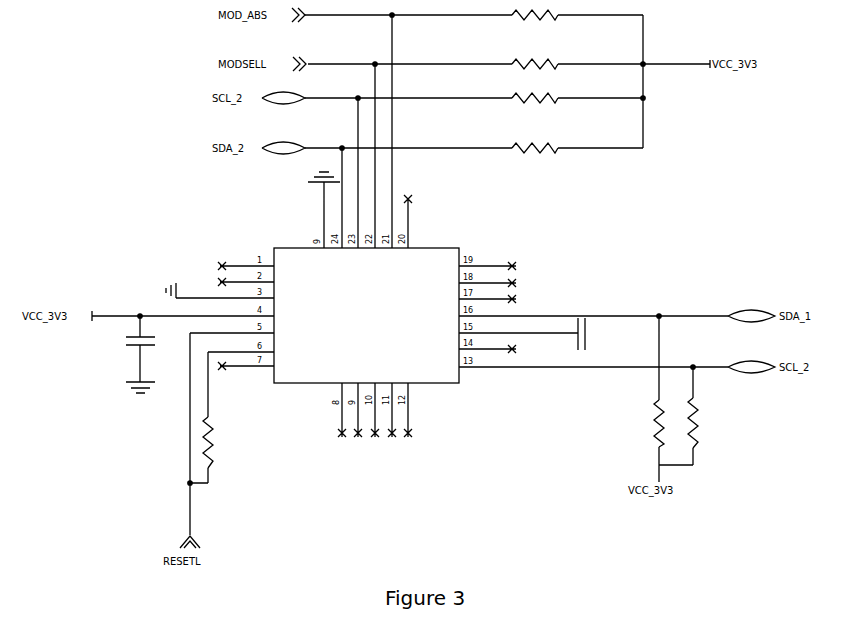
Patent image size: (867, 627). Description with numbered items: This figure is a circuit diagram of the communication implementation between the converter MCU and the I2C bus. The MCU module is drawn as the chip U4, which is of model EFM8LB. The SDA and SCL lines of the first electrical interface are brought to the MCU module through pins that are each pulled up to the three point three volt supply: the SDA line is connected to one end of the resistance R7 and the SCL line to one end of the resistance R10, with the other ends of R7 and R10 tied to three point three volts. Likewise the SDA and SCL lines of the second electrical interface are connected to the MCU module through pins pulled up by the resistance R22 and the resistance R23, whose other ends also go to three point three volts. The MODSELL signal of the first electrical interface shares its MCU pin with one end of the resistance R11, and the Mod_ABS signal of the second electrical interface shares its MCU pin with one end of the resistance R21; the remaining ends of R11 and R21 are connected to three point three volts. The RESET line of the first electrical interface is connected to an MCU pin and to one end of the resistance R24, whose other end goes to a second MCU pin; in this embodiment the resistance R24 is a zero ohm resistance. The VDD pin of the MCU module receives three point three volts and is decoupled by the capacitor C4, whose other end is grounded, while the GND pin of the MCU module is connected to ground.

The EFM8LB microcontroller U4 is at (366, 309).
The resistance R21 is at (535, 15).
The resistance R11 is at (535, 64).
The resistance R10 is at (535, 98).
The resistance R7 is at (535, 148).
The resistance R22 is at (646, 423).
The resistance R23 is at (709, 423).
The resistance R24 is at (229, 442).
The capacitor C4 is at (148, 354).